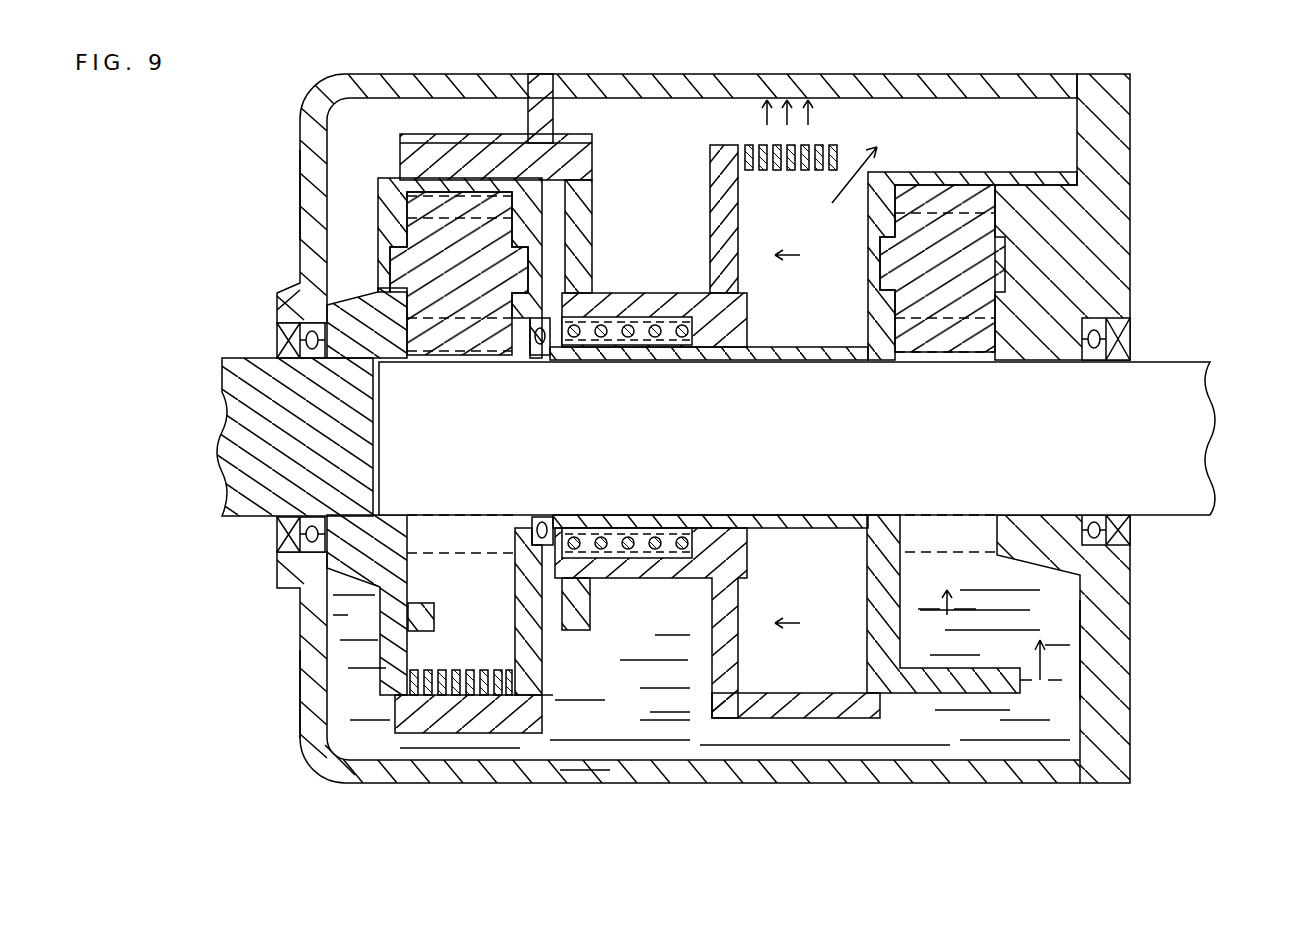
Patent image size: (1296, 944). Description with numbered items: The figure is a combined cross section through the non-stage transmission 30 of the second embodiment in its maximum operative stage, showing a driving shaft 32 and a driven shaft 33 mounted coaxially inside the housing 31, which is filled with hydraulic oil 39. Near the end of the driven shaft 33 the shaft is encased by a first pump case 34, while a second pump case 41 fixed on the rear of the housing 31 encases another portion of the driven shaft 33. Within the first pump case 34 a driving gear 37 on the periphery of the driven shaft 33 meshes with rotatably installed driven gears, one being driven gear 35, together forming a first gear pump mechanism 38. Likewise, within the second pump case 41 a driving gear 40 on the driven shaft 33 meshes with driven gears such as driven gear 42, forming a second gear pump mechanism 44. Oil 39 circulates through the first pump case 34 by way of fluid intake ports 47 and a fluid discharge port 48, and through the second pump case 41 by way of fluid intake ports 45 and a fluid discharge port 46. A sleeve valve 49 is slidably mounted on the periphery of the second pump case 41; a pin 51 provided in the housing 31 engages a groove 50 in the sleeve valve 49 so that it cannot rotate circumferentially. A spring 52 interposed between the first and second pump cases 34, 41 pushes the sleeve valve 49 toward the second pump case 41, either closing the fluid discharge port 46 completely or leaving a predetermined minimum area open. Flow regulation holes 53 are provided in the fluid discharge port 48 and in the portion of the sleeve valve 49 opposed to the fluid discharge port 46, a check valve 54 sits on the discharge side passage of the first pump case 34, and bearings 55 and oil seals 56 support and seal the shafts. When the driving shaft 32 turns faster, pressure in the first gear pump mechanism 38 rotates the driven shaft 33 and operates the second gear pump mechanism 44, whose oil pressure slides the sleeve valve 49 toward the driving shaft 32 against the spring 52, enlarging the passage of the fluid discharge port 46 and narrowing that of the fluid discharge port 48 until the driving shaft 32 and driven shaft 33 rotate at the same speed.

The non-stage transmission 30 is at (1165, 106).
The housing 31 is at (713, 86).
The driving shaft 32 is at (240, 455).
The driven shaft 33 is at (1165, 410).
The first pump case 34 is at (392, 214).
The driven gear 35 is at (405, 268).
The driving gear 37 is at (300, 684).
The first gear pump mechanism 38 is at (397, 197).
The oil 39 is at (848, 740).
The driving gear 40 is at (977, 533).
The second pump case 41 is at (977, 177).
The driven gear 42 is at (1000, 300).
The second gear pump mechanism 44 is at (965, 232).
The fluid intake ports 45 is at (1005, 615).
The fluid discharge port 46 is at (832, 203).
The fluid intake ports 47 is at (553, 698).
The fluid discharge port 48 is at (456, 735).
The sleeve valve 49 is at (600, 300).
The groove 50 is at (437, 135).
The pin 51 is at (579, 180).
The spring 52 is at (630, 325).
The flow regulation holes 53 is at (828, 146).
The check valve 54 is at (405, 608).
The bearings 55 is at (318, 553).
The oil seals 56 is at (277, 337).